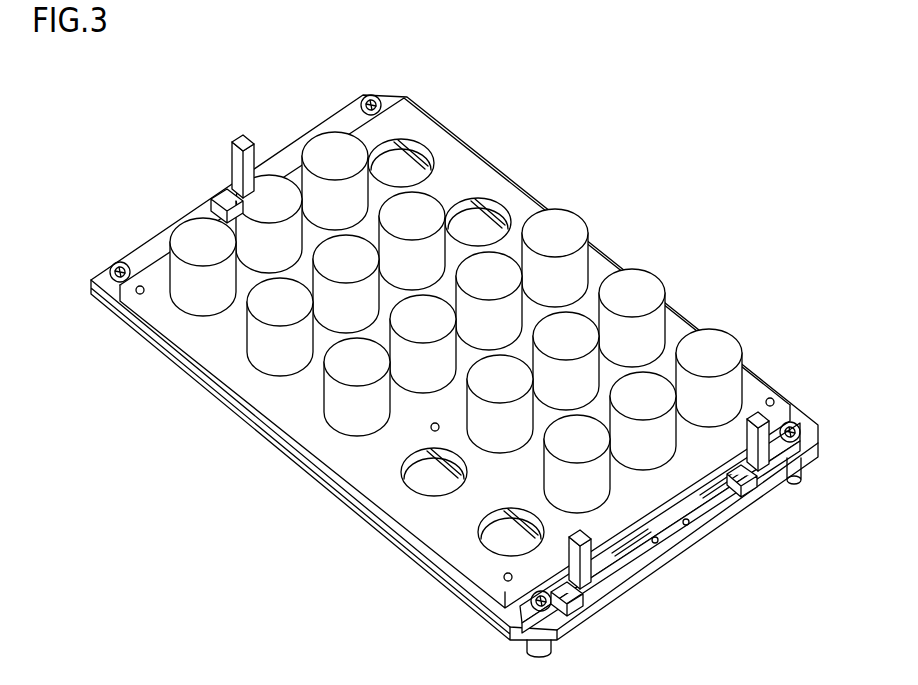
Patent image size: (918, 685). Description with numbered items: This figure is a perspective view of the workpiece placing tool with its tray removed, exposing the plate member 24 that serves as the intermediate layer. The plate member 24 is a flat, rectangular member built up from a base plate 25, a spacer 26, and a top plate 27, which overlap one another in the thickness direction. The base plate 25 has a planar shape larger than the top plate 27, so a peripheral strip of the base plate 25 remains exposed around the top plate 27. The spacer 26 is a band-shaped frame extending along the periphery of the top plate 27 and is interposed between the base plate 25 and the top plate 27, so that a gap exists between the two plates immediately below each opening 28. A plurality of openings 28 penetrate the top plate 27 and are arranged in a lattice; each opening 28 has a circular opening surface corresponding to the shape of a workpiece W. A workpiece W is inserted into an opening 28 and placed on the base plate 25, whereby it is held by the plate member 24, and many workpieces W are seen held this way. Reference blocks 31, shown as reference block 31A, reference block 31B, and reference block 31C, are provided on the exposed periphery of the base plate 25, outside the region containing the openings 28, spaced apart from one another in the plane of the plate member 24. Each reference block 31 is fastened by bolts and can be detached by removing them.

The plate member 24 is at (423, 89).
The base plate 25 is at (96, 280).
The spacer 26 is at (136, 318).
The top plate 27 is at (356, 453).
The opening 28 is at (488, 230).
The reference block 31 is at (496, 344).
The reference block 31A is at (246, 134).
The reference block 31B is at (612, 530).
The reference block 31C is at (757, 418).
The workpiece W is at (196, 233).